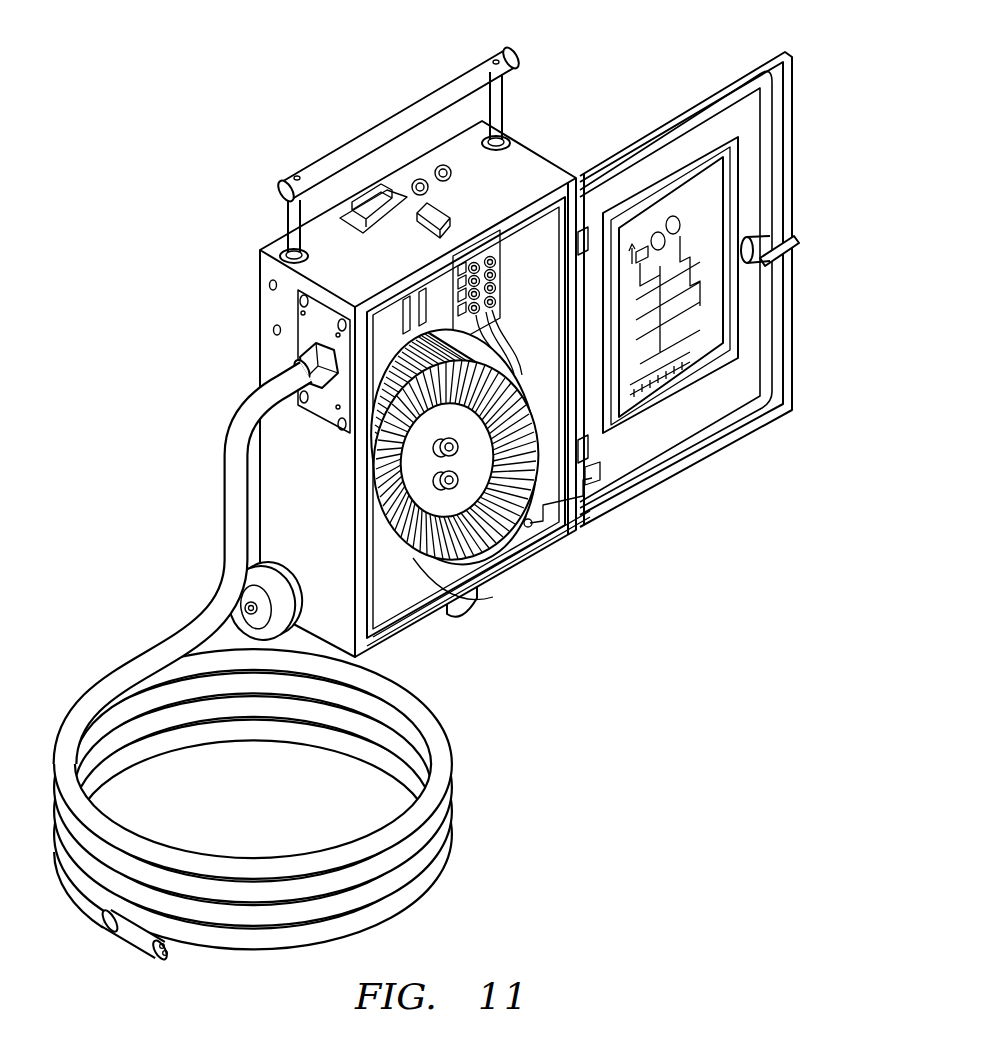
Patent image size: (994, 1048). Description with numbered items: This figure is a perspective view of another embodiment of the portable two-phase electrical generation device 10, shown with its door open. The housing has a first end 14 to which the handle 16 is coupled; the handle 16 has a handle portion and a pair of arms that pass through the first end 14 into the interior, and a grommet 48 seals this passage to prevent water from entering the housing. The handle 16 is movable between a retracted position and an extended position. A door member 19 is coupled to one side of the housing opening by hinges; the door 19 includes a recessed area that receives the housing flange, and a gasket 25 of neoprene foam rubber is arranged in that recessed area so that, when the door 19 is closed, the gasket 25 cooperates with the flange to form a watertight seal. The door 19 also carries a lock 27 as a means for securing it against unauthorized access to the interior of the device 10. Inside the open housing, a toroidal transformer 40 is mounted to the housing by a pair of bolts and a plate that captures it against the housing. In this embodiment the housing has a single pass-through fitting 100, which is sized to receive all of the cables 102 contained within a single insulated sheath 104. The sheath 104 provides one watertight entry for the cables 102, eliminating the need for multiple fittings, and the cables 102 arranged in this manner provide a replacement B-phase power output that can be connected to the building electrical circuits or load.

The portable two-phase electrical generation device 10 is at (112, 98).
The first end 14 is at (531, 166).
The handle 16 is at (412, 108).
The door member 19 is at (735, 269).
The gasket 25 is at (722, 420).
The lock 27 is at (802, 246).
The toroidal transformer 40 is at (453, 540).
The grommet 48 is at (262, 250).
The pass-through fitting 100 is at (270, 352).
The cables 102 is at (118, 943).
The insulated sheath 104 is at (450, 738).